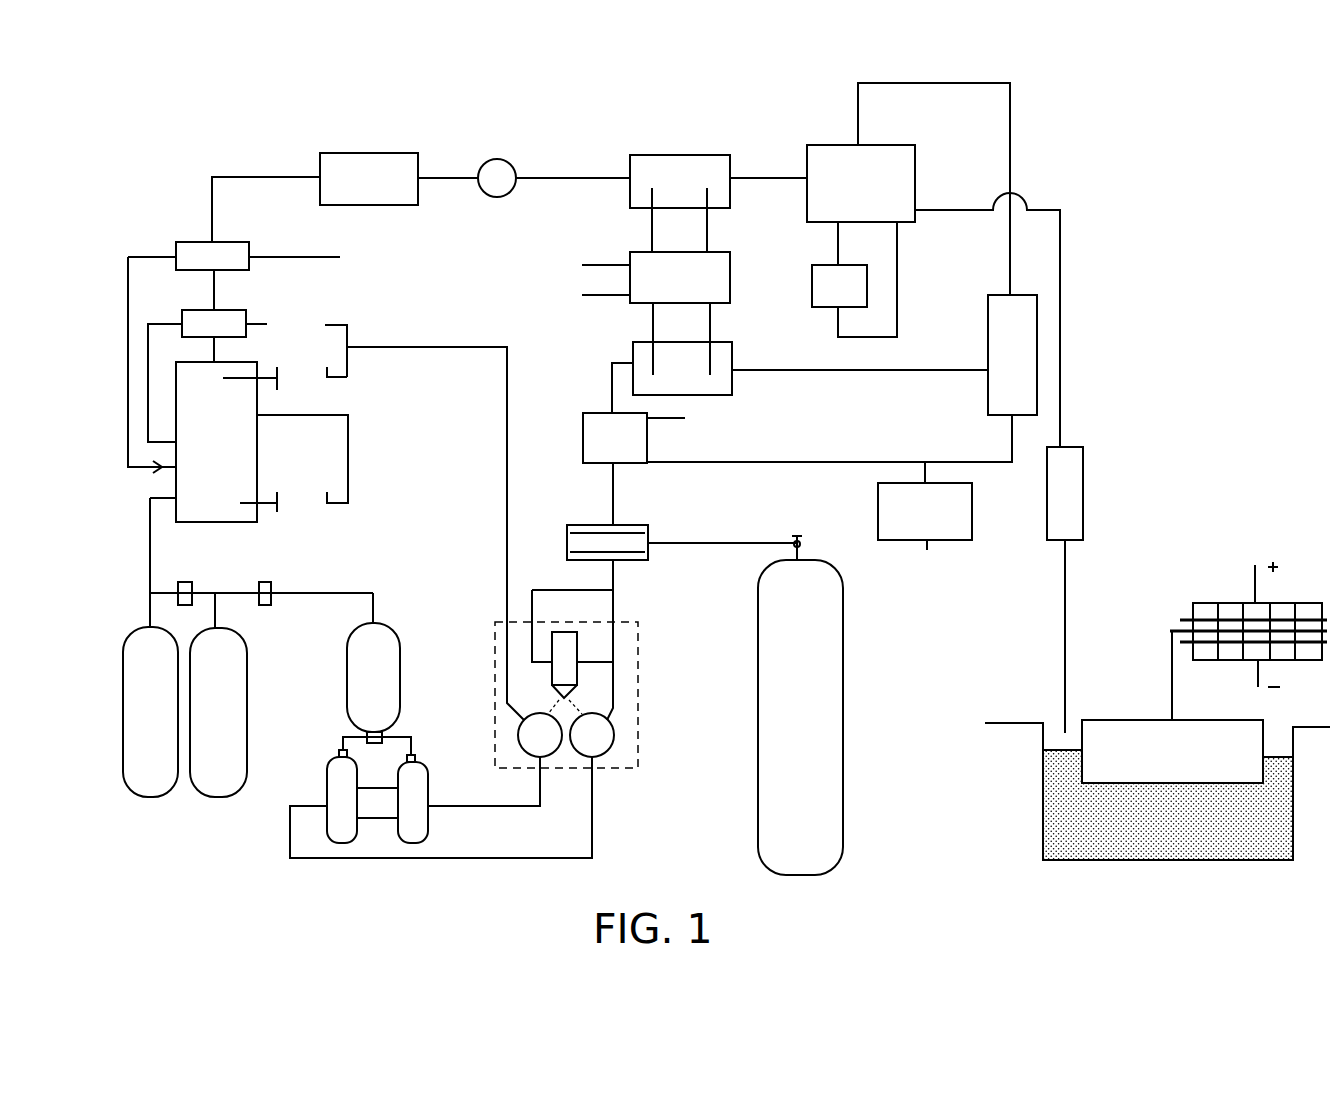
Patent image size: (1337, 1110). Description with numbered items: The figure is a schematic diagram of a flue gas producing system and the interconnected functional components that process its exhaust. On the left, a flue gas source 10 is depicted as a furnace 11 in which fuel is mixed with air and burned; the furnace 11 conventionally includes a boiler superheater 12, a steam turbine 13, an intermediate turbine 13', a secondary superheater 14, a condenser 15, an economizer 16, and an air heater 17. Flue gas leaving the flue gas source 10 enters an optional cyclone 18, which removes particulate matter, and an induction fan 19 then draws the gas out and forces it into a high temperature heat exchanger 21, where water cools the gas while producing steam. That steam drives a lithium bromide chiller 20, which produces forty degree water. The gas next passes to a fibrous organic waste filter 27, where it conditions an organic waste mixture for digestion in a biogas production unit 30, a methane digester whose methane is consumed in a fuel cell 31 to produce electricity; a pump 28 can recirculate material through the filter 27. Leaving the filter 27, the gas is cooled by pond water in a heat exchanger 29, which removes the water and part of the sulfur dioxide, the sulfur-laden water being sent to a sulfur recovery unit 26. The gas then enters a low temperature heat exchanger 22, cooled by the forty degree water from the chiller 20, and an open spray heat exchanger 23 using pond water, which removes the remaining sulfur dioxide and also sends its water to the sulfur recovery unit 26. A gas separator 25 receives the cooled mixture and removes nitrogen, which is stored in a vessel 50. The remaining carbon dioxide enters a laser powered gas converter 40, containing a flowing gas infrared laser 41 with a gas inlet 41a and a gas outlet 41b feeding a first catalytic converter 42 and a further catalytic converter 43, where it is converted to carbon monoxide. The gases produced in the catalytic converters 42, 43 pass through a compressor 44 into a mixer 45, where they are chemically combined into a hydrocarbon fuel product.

The flue gas source 10 is at (187, 96).
The furnace 11 is at (176, 486).
The boiler superheater 12 is at (237, 522).
The steam turbine 13 is at (334, 530).
The intermediate turbine 13' is at (368, 389).
The secondary superheater 14 is at (258, 428).
The condenser 15 is at (300, 330).
The economizer 16 is at (196, 310).
The air heater 17 is at (186, 242).
The cyclone 18 is at (338, 153).
The induction fan 19 is at (490, 162).
The lithium bromide chiller 20 is at (635, 252).
The high temperature heat exchanger 21 is at (650, 157).
The low temperature heat exchanger 22 is at (636, 345).
The open spray heat exchanger 23 is at (583, 438).
The gas separator 25 is at (637, 525).
The sulfur recovery unit 26 is at (960, 540).
The fibrous organic waste filter 27 is at (822, 147).
The pump 28 is at (812, 272).
The heat exchanger 29 is at (988, 323).
The biogas production unit 30 is at (1043, 772).
The fuel cell 31 is at (1220, 603).
The laser powered gas converter 40 is at (622, 622).
The flowing gas infrared laser 41 is at (577, 645).
The gas inlet 41a is at (537, 662).
The gas outlet 41b is at (600, 668).
The first catalytic converter 42 is at (612, 747).
The catalytic converter 43 is at (518, 740).
The compressor 44 is at (325, 780).
The mixer 45 is at (347, 660).
The vessel 50 is at (843, 727).